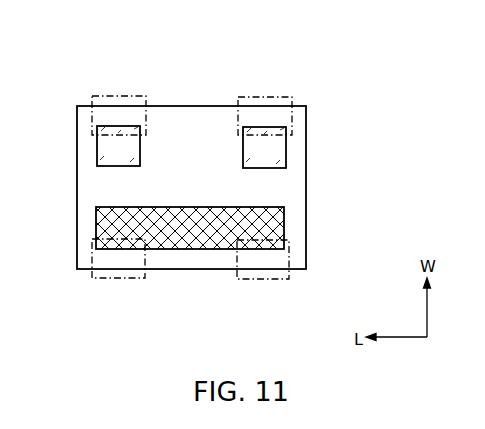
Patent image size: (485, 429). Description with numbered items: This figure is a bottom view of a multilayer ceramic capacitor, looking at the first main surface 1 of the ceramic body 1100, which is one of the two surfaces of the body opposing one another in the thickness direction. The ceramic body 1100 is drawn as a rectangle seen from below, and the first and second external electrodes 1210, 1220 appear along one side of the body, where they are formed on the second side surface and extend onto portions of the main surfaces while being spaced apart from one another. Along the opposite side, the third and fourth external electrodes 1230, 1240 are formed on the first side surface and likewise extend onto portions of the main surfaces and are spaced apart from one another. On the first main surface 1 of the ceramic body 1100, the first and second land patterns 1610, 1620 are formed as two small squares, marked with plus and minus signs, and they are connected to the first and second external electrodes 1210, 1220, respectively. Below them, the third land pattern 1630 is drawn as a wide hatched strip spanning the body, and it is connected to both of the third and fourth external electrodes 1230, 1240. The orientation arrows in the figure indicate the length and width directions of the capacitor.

The first main surface 1 is at (288, 189).
The ceramic body 1100 is at (188, 106).
The first external electrode 1210 is at (107, 94).
The second external electrode 1220 is at (283, 96).
The third external electrode 1230 is at (102, 280).
The fourth external electrode 1240 is at (282, 281).
The first land pattern 1610 is at (124, 126).
The second land pattern 1620 is at (253, 127).
The third land pattern 1630 is at (192, 249).